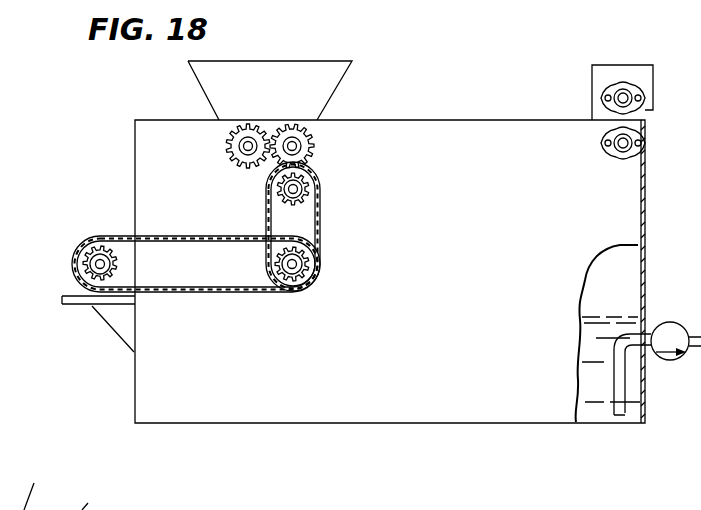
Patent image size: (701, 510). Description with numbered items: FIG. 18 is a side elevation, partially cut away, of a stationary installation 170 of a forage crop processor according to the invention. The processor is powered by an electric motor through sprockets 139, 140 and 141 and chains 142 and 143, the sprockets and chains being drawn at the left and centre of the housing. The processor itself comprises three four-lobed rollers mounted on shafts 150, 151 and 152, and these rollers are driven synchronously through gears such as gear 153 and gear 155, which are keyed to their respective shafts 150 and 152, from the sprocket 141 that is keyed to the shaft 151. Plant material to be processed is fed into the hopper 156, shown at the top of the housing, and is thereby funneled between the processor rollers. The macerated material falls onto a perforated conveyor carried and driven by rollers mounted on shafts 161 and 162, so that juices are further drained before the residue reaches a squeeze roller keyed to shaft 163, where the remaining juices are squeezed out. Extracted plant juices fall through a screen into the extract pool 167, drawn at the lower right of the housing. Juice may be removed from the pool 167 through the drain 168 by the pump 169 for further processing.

The sprocket 139 is at (110, 250).
The sprocket 140 is at (290, 286).
The sprocket 141 is at (318, 189).
The chain 142 is at (242, 296).
The chain 143 is at (322, 214).
The shaft 150 is at (294, 147).
The shaft 151 is at (288, 190).
The shaft 152 is at (243, 148).
The gear 153 is at (308, 130).
The gear 155 is at (234, 136).
The hopper 156 is at (348, 56).
The shaft 161 is at (298, 265).
The shaft 162 is at (616, 152).
The shaft 163 is at (620, 96).
The extract pool 167 is at (597, 392).
The drain 168 is at (628, 414).
The pump 169 is at (672, 322).
The stationary installation 170 is at (128, 394).